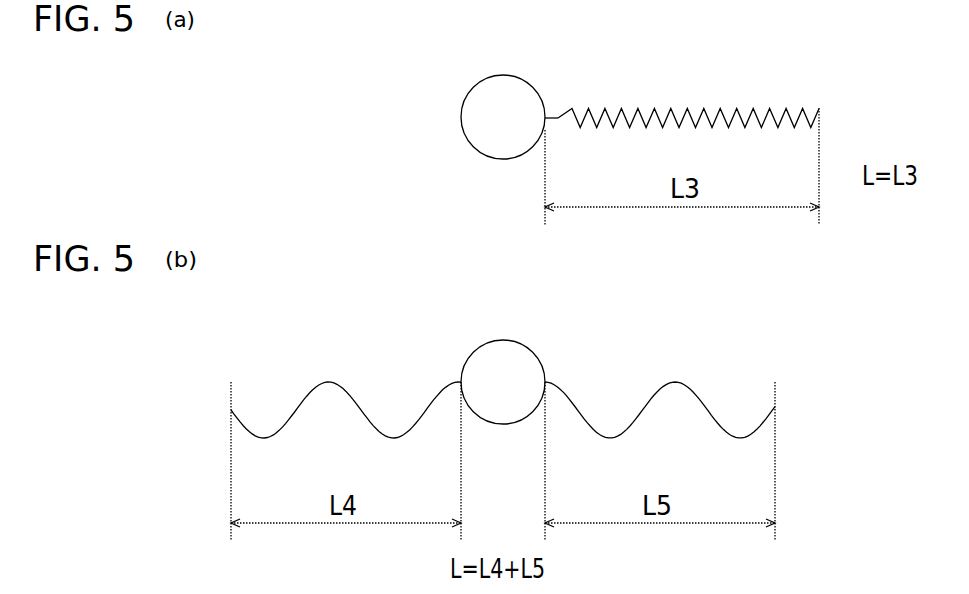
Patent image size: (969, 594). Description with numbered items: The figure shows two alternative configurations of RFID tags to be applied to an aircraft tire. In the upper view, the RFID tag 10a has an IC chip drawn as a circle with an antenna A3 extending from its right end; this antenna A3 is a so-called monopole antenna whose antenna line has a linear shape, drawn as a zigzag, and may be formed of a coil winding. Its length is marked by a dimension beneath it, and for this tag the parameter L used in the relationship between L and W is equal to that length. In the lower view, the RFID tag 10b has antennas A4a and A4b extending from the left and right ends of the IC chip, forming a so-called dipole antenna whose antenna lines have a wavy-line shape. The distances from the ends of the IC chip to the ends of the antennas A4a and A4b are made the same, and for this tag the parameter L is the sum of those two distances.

The RFID tag 10a is at (682, 65).
The RFID tag 10b is at (503, 342).
The antenna A3 is at (731, 106).
The antenna A4a is at (353, 368).
The antenna A4b is at (721, 368).